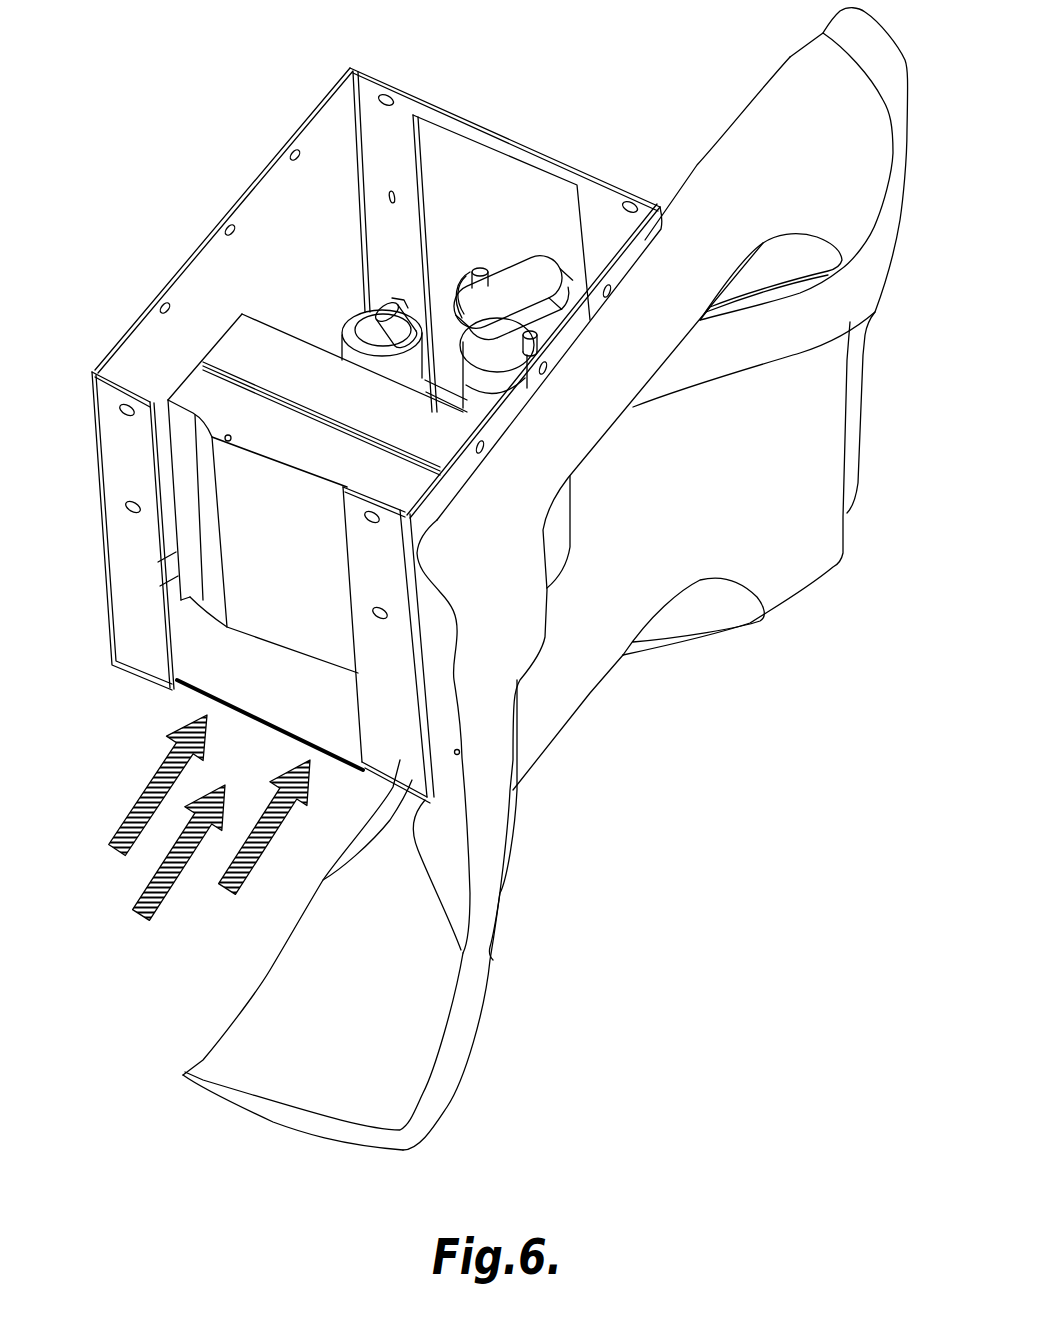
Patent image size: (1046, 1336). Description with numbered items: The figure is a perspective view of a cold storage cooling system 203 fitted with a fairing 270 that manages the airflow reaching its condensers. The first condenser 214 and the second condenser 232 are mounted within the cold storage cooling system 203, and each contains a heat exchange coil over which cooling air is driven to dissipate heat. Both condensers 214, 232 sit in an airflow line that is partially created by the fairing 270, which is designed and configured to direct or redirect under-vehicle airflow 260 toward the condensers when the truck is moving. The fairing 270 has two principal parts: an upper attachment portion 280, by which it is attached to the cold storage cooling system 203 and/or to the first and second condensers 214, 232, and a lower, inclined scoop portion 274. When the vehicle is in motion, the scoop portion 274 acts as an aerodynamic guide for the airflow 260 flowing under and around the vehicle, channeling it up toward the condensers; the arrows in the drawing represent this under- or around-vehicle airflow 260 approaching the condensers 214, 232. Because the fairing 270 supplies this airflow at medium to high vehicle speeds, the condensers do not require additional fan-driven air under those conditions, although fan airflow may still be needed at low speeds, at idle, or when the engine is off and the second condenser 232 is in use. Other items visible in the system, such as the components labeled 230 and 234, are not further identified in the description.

The cold storage cooling system 203 is at (400, 90).
The first condenser 214 is at (190, 398).
The connector cap 230 is at (530, 268).
The second condenser 232 is at (267, 335).
The capacitor 234 is at (363, 312).
The under- or around-vehicle airflow 260 is at (157, 787).
The fairing 270 is at (510, 820).
The scoop portion 274 is at (340, 1088).
The upper attachment portion 280 is at (682, 190).